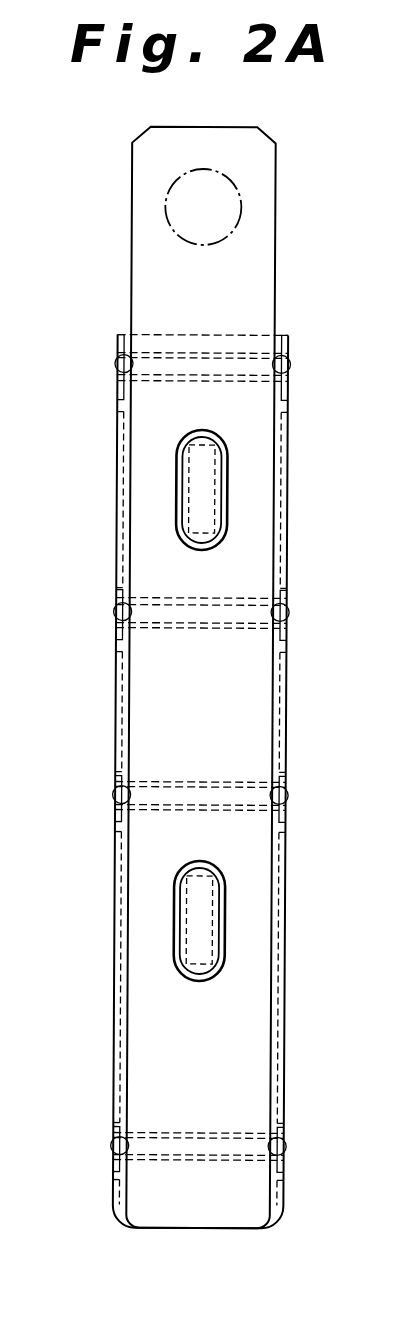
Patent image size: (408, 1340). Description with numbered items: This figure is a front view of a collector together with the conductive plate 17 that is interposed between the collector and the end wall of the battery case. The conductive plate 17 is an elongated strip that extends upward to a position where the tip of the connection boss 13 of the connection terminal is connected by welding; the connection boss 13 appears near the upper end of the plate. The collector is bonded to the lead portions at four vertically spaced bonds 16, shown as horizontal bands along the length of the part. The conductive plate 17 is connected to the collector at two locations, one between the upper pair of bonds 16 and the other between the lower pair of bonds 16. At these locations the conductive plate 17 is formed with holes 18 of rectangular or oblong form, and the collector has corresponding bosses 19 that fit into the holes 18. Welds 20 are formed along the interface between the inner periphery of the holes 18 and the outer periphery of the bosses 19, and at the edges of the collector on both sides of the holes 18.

The connection boss 13 is at (188, 200).
The bonds 16 is at (213, 352).
The conductive plate 17 is at (156, 272).
The holes 18 is at (225, 433).
The bosses 19 is at (200, 460).
The welds 20 is at (93, 511).